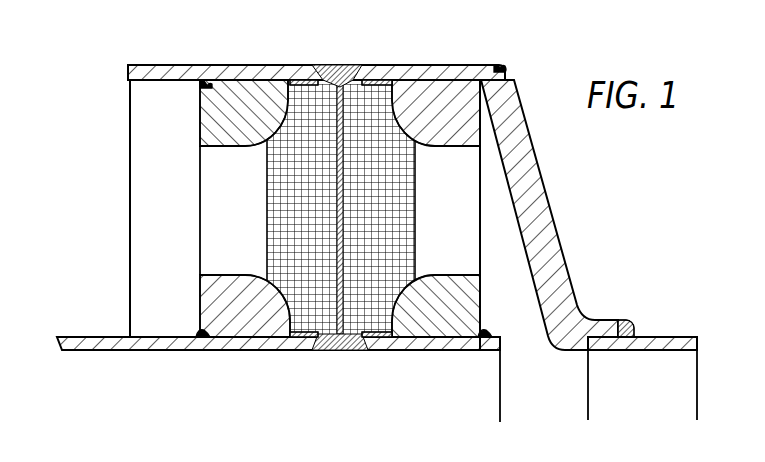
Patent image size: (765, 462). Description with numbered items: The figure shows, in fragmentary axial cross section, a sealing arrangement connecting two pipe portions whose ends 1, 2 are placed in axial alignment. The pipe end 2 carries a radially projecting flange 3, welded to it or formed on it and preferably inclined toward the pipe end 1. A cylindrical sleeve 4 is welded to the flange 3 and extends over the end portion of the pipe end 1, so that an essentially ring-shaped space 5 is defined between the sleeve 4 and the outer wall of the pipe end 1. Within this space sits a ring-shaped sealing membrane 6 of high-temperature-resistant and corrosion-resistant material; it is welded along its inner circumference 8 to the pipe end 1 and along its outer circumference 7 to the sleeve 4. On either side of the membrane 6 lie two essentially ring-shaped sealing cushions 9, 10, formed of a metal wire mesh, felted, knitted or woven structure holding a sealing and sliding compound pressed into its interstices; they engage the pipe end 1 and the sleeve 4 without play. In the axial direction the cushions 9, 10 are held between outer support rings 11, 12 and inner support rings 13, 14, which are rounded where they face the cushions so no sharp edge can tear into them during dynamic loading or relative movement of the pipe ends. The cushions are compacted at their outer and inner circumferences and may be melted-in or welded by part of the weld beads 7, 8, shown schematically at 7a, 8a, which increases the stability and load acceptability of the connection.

The pipe end 1 is at (150, 345).
The pipe end 2 is at (661, 336).
The flange 3 is at (532, 150).
The cylindrical sleeve 4 is at (263, 72).
The ring-shaped space 5 is at (142, 210).
The sealing membrane 6 is at (409, 80).
The outer circumference weld 7 is at (340, 72).
The cushion weld region 7a is at (300, 80).
The inner circumference weld 8 is at (338, 353).
The cushion weld region 8a is at (313, 338).
The sealing cushion 9 is at (265, 228).
The sealing cushion 10 is at (398, 222).
The outer support ring 11 is at (212, 95).
The outer support ring 12 is at (466, 90).
The inner support ring 13 is at (241, 325).
The inner support ring 14 is at (455, 322).